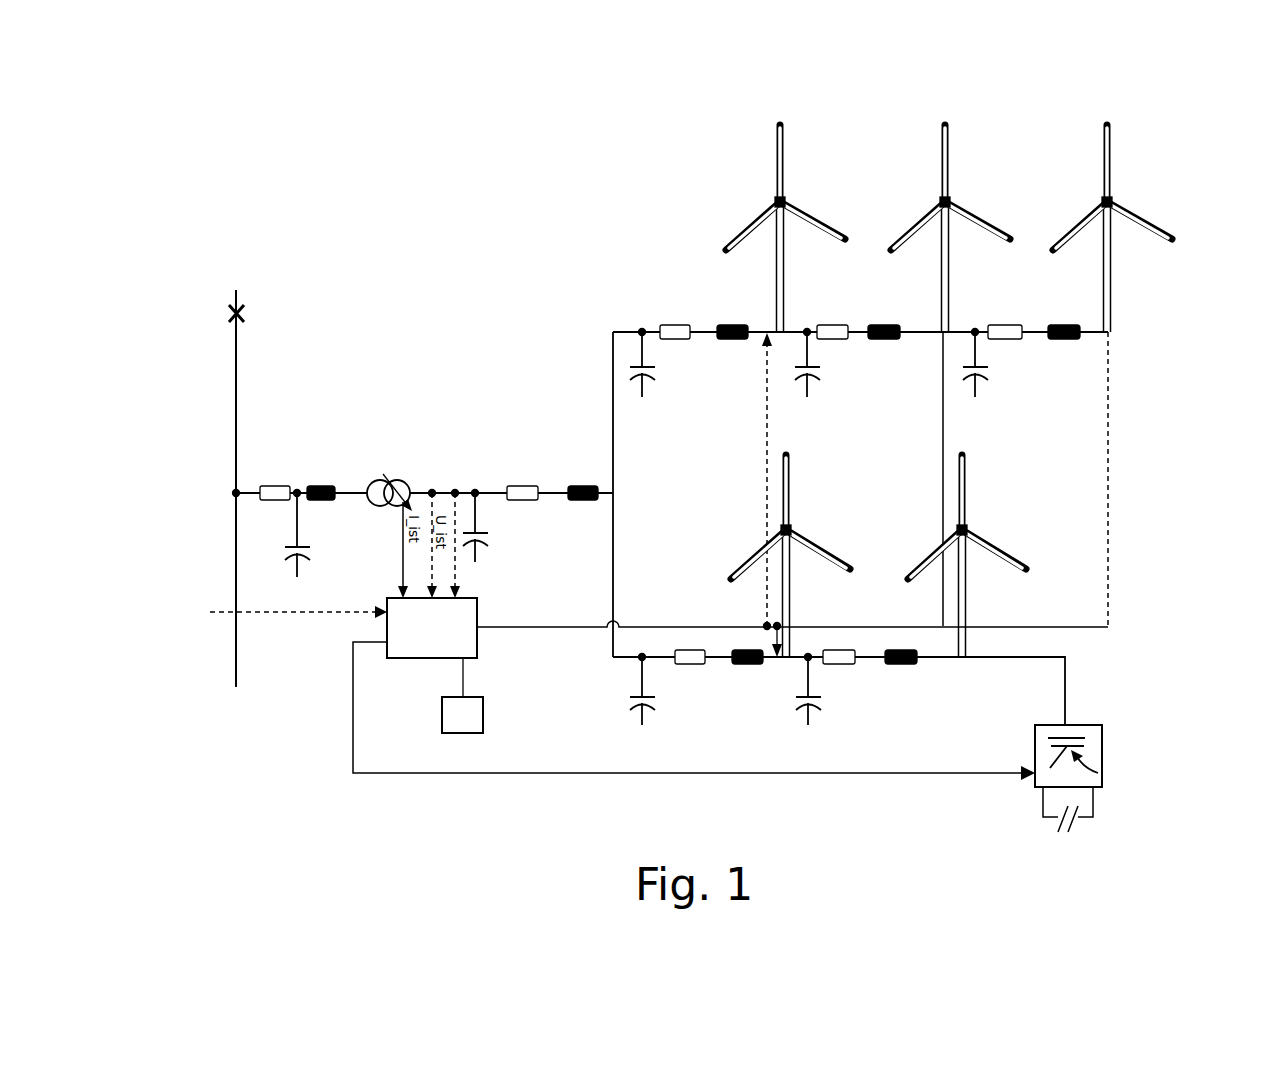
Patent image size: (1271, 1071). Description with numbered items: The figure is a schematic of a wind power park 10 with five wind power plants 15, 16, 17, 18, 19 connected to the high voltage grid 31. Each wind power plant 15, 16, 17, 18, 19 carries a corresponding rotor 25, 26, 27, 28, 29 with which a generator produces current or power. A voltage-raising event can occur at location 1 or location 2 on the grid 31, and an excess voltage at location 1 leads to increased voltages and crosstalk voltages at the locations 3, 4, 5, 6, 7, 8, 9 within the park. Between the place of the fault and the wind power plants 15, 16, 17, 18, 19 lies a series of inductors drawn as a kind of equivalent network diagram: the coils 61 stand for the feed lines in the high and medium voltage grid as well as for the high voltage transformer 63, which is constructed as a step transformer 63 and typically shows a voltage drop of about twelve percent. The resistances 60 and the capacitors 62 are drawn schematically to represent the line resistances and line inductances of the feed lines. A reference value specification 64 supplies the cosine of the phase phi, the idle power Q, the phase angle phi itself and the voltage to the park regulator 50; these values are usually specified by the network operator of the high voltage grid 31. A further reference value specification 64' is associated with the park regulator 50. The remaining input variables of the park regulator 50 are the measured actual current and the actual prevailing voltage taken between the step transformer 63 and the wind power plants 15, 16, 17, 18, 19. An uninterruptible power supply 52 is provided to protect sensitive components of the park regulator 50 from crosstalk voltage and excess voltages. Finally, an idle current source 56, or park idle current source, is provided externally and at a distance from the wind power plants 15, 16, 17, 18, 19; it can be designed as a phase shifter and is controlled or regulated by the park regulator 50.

The wind power park 10 is at (510, 208).
The wind power plant 15 is at (810, 172).
The wind power plant 16 is at (976, 172).
The wind power plant 17 is at (1136, 172).
The wind power plant 18 is at (813, 502).
The wind power plant 19 is at (990, 502).
The rotor 25 is at (792, 203).
The rotor 26 is at (955, 201).
The rotor 27 is at (1117, 201).
The rotor 28 is at (796, 529).
The rotor 29 is at (972, 529).
The grid 31 is at (237, 423).
The park regulator 50 is at (418, 648).
The uninterruptible power supply 52 is at (483, 700).
The idle current source 56 is at (1100, 770).
The resistance 60 is at (272, 485).
The coil 61 is at (320, 485).
The capacitor 62 is at (300, 546).
The step transformer 63 is at (396, 481).
The reference value specification 64 is at (281, 654).
The reference value specification 64' is at (792, 661).
The location 1 is at (208, 318).
The location 2 is at (223, 493).
The location 3 is at (383, 530).
The location 4 is at (643, 500).
The location 5 is at (784, 350).
The location 6 is at (945, 353).
The location 7 is at (1108, 353).
The location 8 is at (788, 678).
The location 9 is at (968, 680).